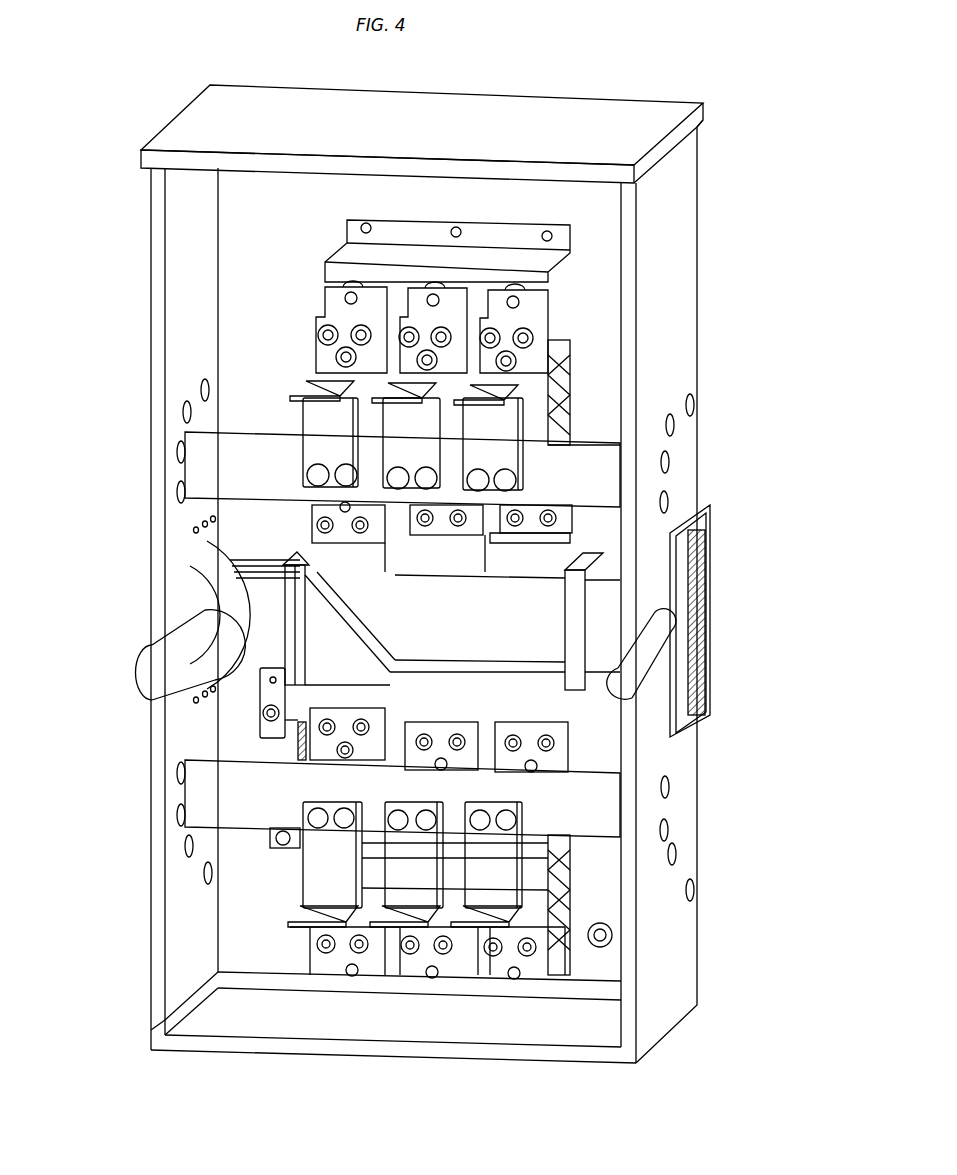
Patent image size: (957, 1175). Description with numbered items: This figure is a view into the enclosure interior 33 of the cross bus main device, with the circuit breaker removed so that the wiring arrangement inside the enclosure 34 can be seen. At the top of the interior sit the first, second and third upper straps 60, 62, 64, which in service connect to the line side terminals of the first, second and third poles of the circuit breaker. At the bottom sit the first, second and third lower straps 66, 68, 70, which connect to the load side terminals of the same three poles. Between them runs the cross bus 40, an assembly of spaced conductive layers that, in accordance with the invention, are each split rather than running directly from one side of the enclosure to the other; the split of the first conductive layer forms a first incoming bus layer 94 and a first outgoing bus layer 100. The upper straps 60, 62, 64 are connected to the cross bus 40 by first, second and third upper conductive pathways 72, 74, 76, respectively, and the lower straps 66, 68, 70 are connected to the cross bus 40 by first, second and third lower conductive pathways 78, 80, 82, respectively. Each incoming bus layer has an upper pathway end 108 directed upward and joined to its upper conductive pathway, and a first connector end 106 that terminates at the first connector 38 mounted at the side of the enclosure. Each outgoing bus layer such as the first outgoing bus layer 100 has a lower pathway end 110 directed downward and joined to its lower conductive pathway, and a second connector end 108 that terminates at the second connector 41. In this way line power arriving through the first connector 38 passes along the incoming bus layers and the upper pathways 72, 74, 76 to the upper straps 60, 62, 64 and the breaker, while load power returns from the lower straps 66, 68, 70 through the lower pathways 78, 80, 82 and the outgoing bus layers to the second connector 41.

The enclosure interior 33 is at (255, 210).
The enclosure 34 is at (660, 100).
The first connector 38 is at (710, 550).
The cross bus 40 is at (545, 610).
The second connector 41 is at (118, 660).
The first upper strap 60 is at (300, 412).
The second upper strap 62 is at (412, 442).
The third upper strap 64 is at (500, 435).
The first lower strap 66 is at (322, 873).
The second lower strap 68 is at (413, 883).
The third lower strap 70 is at (575, 873).
The first upper conductive pathway 72 is at (300, 505).
The second upper conductive pathway 74 is at (320, 545).
The third upper conductive pathway 76 is at (560, 528).
The first lower conductive pathway 78 is at (262, 715).
The second lower conductive pathway 80 is at (440, 752).
The third lower conductive pathway 82 is at (560, 748).
The first incoming bus layer 94 is at (429, 636).
The first outgoing bus layer 100 is at (348, 648).
The first connector end 106 is at (622, 633).
The upper pathway end 108 is at (283, 605).
The lower pathway end 110 is at (366, 698).